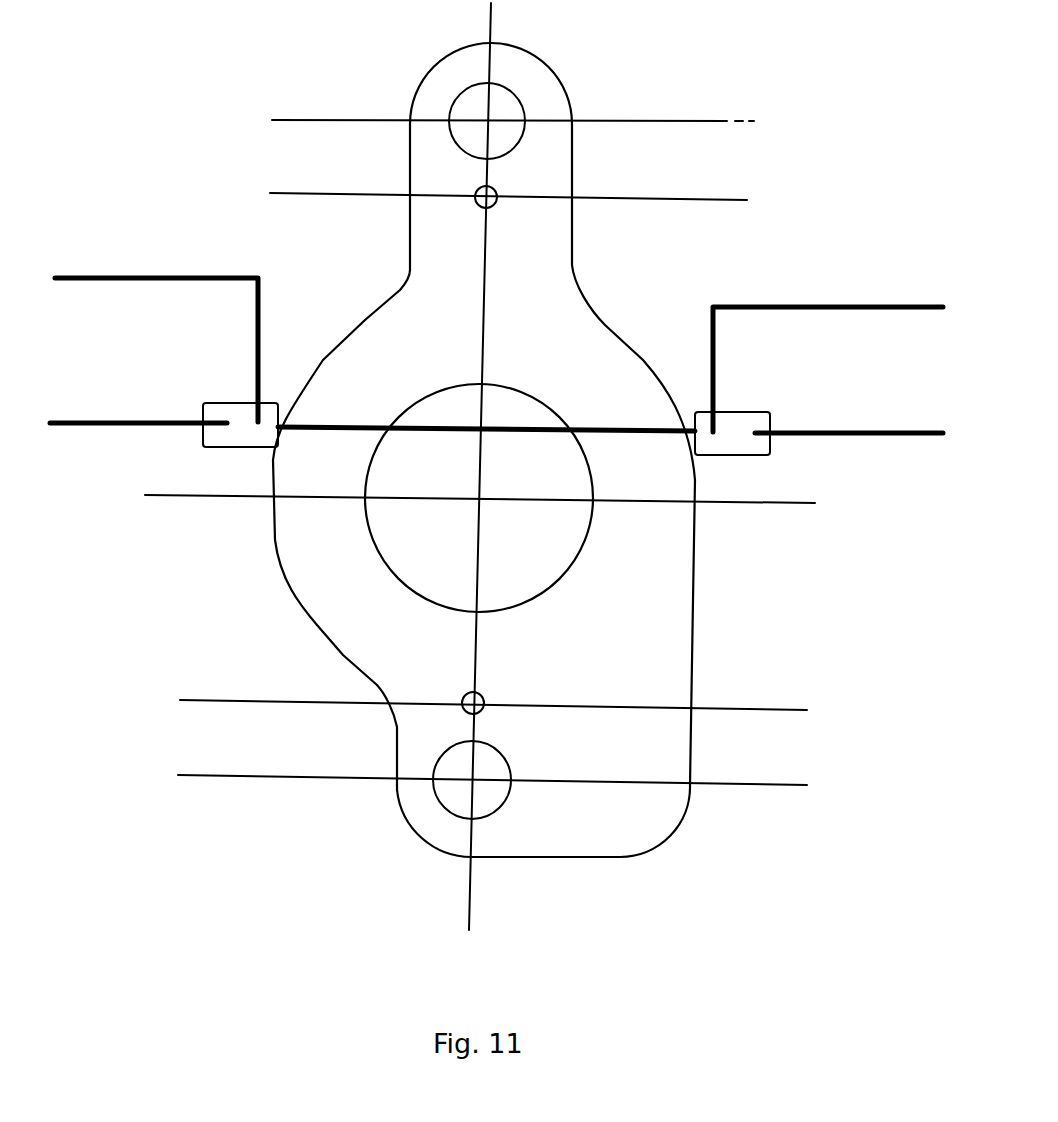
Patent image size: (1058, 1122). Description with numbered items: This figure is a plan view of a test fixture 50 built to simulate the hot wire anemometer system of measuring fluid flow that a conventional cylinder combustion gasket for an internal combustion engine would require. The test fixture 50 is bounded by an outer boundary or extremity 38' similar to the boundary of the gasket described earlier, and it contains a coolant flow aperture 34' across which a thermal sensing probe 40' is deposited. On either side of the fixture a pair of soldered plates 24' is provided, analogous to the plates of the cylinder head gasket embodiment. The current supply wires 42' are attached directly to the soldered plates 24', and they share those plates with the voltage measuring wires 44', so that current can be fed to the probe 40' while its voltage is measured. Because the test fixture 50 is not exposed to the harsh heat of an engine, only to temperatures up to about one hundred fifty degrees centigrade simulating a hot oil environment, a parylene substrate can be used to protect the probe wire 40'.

The test fixture 50 is at (496, 466).
The boundary or extremity 38' is at (530, 450).
The coolant flow aperture 34' is at (479, 498).
The thermal sensing probe 40' is at (486, 459).
The soldered plates 24' is at (488, 394).
The current supply wires 42' is at (496, 400).
The voltage measuring wires 44' is at (499, 322).